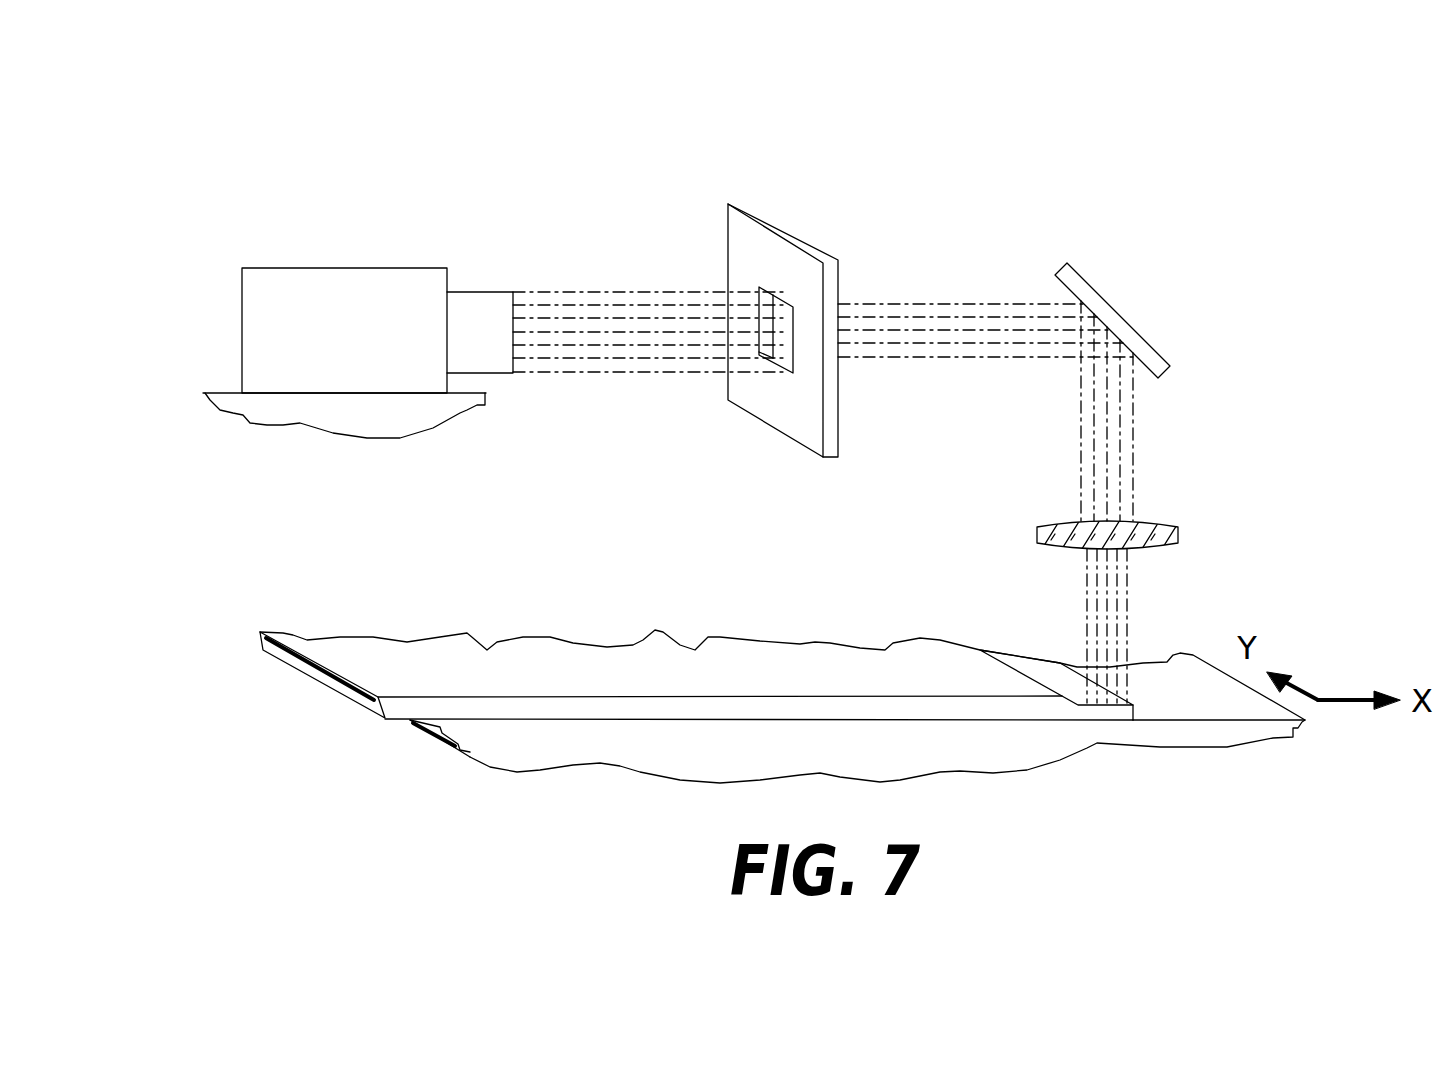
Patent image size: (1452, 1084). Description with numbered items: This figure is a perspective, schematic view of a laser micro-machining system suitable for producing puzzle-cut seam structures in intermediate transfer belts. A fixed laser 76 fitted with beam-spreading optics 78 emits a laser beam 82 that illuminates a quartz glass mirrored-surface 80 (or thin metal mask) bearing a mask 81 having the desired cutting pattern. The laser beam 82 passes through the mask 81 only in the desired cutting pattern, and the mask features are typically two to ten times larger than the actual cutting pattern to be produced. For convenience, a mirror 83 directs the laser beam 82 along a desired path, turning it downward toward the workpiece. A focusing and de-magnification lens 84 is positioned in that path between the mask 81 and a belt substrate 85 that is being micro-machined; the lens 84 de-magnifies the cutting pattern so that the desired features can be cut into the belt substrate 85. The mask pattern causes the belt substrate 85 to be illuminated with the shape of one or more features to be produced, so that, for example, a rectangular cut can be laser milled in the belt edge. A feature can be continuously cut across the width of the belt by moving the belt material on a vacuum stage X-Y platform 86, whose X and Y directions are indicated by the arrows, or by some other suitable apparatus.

The fixed laser 76 is at (350, 267).
The beam-spreading optics 78 is at (483, 291).
The quartz glass mirrored-surface 80 is at (793, 232).
The mask 81 is at (793, 372).
The laser beam 82 is at (617, 290).
The mirror 83 is at (1127, 317).
The focusing and de-magnification lens 84 is at (1175, 528).
The belt substrate 85 is at (877, 652).
The vacuum stage X-Y platform 86 is at (1227, 747).